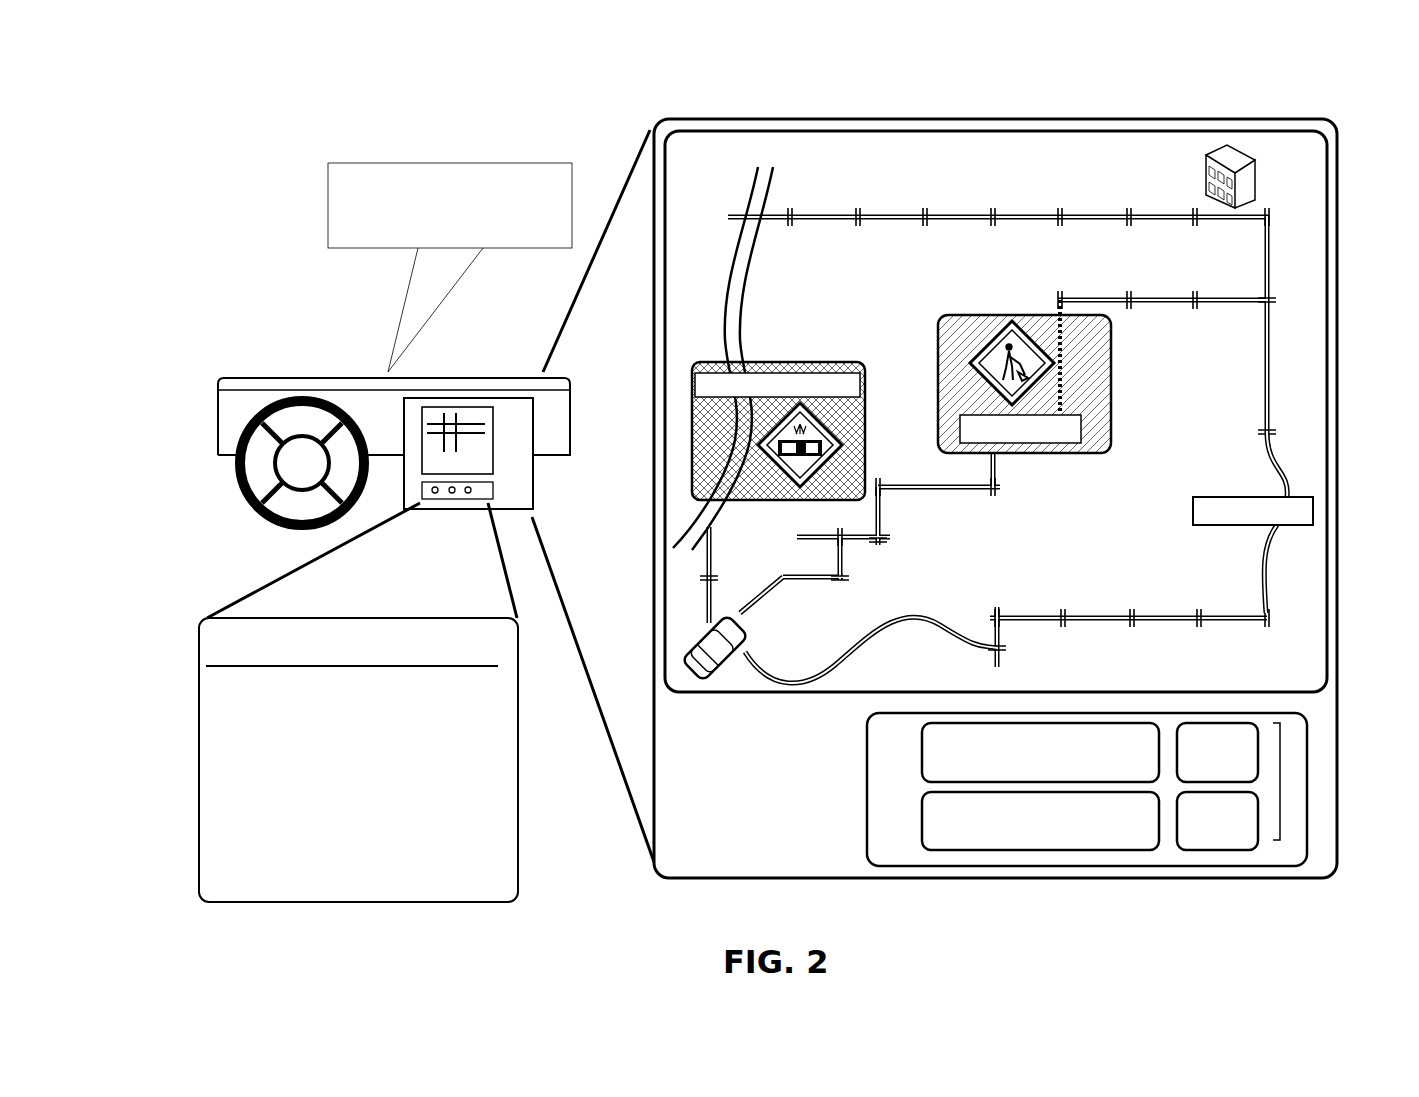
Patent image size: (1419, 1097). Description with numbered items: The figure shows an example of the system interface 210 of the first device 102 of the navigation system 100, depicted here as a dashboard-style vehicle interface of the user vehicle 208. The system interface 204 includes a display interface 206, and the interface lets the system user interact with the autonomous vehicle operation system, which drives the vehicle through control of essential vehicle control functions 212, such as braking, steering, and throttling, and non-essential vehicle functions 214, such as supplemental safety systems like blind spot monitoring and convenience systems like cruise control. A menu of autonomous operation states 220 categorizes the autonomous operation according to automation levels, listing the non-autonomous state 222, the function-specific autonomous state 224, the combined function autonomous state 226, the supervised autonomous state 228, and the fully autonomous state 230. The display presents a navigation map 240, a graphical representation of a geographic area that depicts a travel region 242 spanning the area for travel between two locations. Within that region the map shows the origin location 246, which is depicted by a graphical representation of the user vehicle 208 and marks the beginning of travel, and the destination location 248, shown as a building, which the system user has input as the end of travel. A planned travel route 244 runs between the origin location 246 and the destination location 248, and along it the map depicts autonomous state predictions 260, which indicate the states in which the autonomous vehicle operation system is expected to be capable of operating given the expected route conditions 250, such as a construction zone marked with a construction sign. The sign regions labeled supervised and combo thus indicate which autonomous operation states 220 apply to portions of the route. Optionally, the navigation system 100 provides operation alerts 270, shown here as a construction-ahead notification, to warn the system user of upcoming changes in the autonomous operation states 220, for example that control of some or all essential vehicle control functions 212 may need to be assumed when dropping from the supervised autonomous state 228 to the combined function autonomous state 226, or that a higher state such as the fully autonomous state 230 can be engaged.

The navigation system 100 is at (250, 115).
The first device 102 is at (475, 399).
The system interface 204 is at (475, 400).
The display interface 206 is at (1033, 501).
The user vehicle 208 is at (742, 668).
The system interface 210 is at (242, 365).
The essential vehicle control functions 212 is at (335, 385).
The non-essential vehicle functions 214 is at (1280, 778).
The autonomous operation states 220 is at (225, 643).
The non-autonomous state 222 is at (300, 860).
The function-specific autonomous state 224 is at (295, 822).
The combined function autonomous state 226 is at (310, 775).
The supervised autonomous state 228 is at (275, 735).
The fully autonomous state 230 is at (277, 688).
The navigation map 240 is at (985, 131).
The travel region 242 is at (1093, 155).
The planned travel route 244 is at (1300, 497).
The origin location 246 is at (708, 660).
The destination location 248 is at (1243, 165).
The expected route conditions 250 is at (1027, 337).
The autonomous state predictions 260 is at (1175, 382).
The operation alerts 270 is at (520, 163).